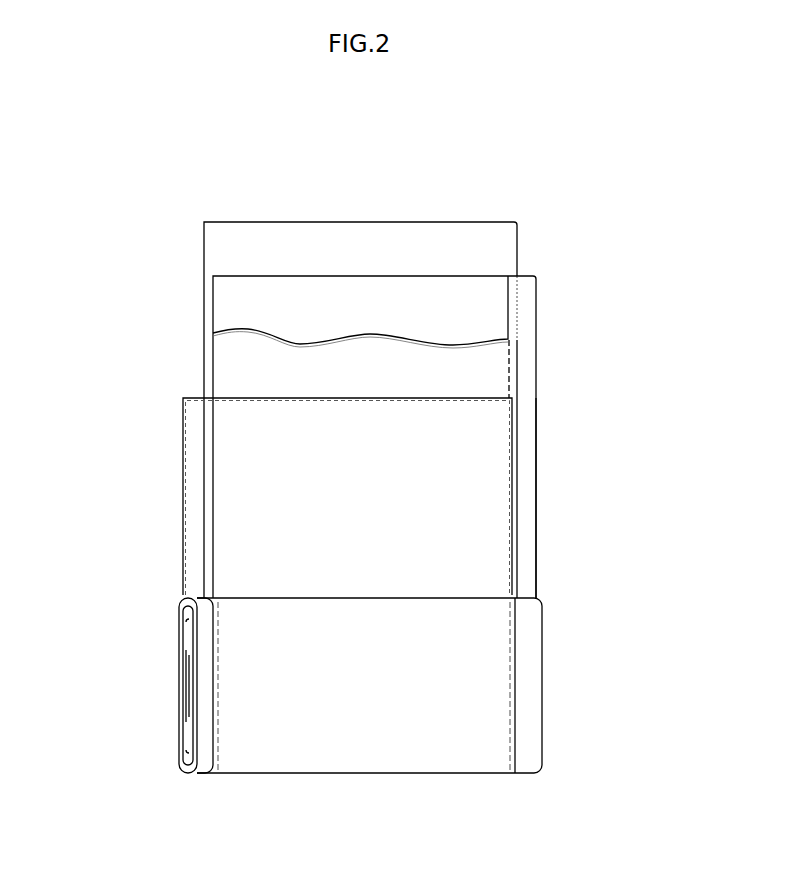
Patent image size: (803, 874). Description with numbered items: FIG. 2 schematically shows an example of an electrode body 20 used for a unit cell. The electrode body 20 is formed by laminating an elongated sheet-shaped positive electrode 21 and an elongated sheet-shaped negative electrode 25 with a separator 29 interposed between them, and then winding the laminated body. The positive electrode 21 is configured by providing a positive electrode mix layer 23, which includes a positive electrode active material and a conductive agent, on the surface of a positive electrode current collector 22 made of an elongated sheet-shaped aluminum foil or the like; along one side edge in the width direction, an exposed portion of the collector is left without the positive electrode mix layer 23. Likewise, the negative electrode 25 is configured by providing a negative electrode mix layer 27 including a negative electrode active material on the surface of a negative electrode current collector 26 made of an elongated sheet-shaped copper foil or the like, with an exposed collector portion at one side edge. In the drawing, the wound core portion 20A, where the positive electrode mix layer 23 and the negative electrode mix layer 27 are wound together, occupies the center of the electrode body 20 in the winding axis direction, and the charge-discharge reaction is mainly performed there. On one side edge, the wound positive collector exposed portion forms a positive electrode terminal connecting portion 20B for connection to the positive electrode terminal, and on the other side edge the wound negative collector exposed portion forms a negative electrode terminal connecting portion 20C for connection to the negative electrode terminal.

The electrode body 20 is at (89, 156).
The wound core portion 20A is at (418, 768).
The positive electrode terminal connecting portion 20B is at (528, 770).
The negative electrode terminal connecting portion 20C is at (193, 775).
The positive electrode 21 is at (538, 347).
The positive electrode current collector 22 is at (525, 447).
The positive electrode mix layer 23 is at (488, 298).
The negative electrode 25 is at (180, 466).
The negative electrode current collector 26 is at (196, 496).
The negative electrode mix layer 27 is at (263, 540).
The separator 29 is at (222, 242).